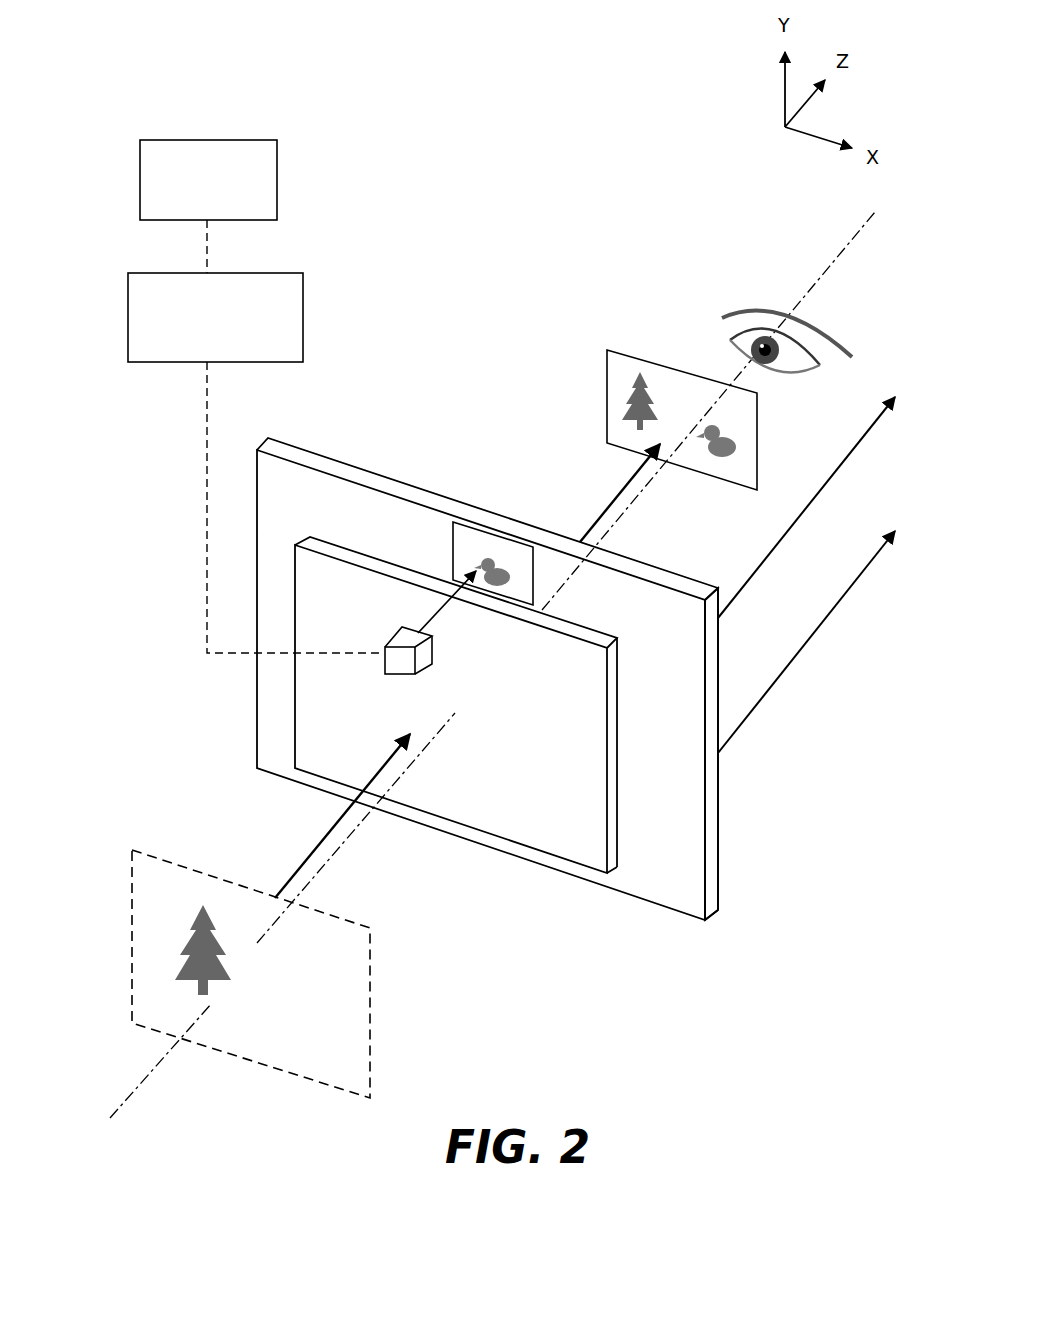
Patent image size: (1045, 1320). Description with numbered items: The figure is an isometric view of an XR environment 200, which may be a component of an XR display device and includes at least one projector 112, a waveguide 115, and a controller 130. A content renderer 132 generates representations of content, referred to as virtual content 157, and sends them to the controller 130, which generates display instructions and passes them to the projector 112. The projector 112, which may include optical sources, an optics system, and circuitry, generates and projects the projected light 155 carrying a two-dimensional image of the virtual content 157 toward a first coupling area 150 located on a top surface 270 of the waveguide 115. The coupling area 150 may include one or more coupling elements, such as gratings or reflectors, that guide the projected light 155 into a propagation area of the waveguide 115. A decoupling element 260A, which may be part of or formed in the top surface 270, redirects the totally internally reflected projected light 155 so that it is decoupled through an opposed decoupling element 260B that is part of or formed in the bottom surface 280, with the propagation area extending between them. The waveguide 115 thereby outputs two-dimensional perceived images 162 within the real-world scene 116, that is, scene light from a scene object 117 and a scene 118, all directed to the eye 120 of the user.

The XR environment 200 is at (274, 73).
The content renderer 132 is at (203, 138).
The controller 130 is at (187, 273).
The eye 120 is at (765, 333).
The perceived image 162 is at (678, 367).
The first coupling area 150 is at (445, 472).
The real-world scene 116 is at (345, 661).
The virtual content 157 is at (470, 546).
The projected light 155 is at (474, 642).
The projector 112 is at (383, 660).
The waveguide 115 is at (601, 723).
The bottom surface 280 is at (728, 813).
The decoupling element 260B is at (774, 882).
The decoupling element 260A is at (456, 741).
The top surface 270 is at (481, 729).
The scene object 117 is at (263, 984).
The scene 118 is at (286, 974).